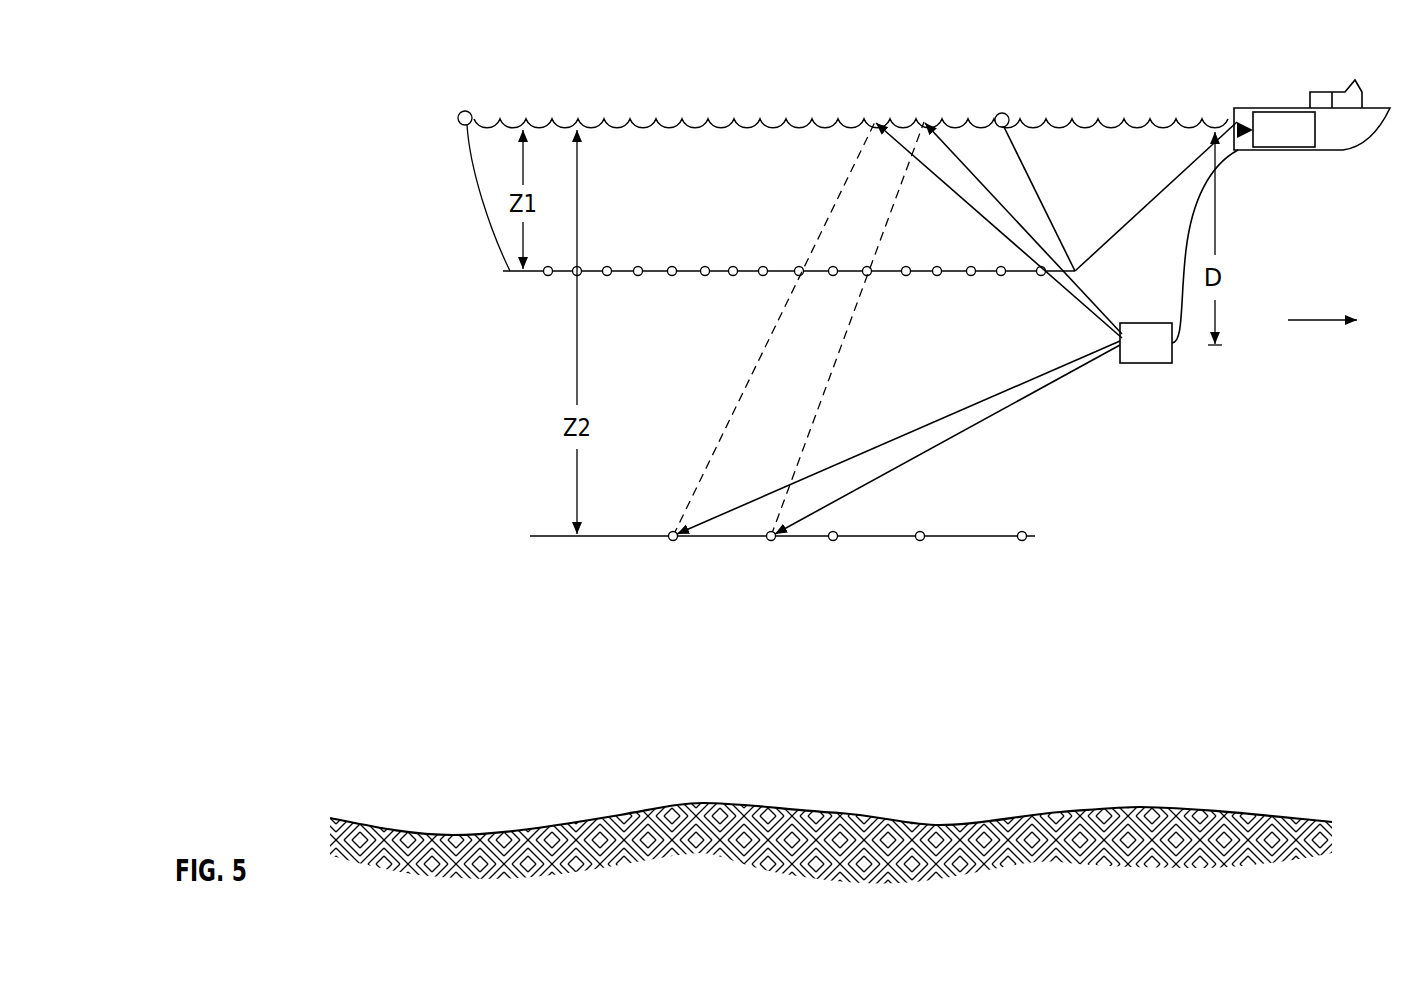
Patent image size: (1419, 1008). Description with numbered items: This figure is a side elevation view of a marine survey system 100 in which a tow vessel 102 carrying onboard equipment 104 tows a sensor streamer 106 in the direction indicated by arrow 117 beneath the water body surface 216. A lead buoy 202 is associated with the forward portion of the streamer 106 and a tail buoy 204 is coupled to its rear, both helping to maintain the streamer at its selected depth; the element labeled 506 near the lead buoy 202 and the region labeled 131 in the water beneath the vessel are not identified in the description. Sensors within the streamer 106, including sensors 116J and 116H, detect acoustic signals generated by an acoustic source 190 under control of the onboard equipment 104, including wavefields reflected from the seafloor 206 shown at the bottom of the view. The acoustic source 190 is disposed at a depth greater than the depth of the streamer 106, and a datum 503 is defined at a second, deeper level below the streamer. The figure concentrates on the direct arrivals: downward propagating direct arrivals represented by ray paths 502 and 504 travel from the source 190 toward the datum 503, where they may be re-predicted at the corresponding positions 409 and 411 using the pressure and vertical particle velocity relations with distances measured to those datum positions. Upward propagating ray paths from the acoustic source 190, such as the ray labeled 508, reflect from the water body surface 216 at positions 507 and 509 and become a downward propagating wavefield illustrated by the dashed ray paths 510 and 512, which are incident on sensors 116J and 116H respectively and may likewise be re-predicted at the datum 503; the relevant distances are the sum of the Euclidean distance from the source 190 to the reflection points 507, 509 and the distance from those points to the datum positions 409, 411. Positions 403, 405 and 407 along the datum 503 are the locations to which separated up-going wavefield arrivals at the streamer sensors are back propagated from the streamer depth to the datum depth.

The marine survey system 100 is at (270, 102).
The tow vessel 102 is at (1248, 106).
The onboard equipment 104 is at (1266, 143).
The sensor streamer 106 is at (617, 275).
The sensor 116J is at (800, 275).
The sensor 116H is at (868, 275).
The arrow 117 is at (1303, 318).
The body of water 131 is at (1317, 507).
The acoustic source 190 is at (1130, 357).
The lead buoy 202 is at (1000, 112).
The tail buoy 204 is at (458, 118).
The seafloor 206 is at (638, 805).
The water body surface 216 is at (683, 125).
The position 403 is at (833, 542).
The position 405 is at (921, 542).
The position 407 is at (1022, 542).
The position 409 is at (673, 542).
The position 411 is at (771, 542).
The ray path 502 is at (897, 433).
The datum 503 is at (598, 540).
The ray path 504 is at (950, 442).
The source cable 506 is at (1022, 182).
The reflection point 507 is at (922, 118).
The up-going wave 508 is at (995, 230).
The reflection point 509 is at (876, 118).
The ray path 510 is at (834, 204).
The ray path 512 is at (882, 236).